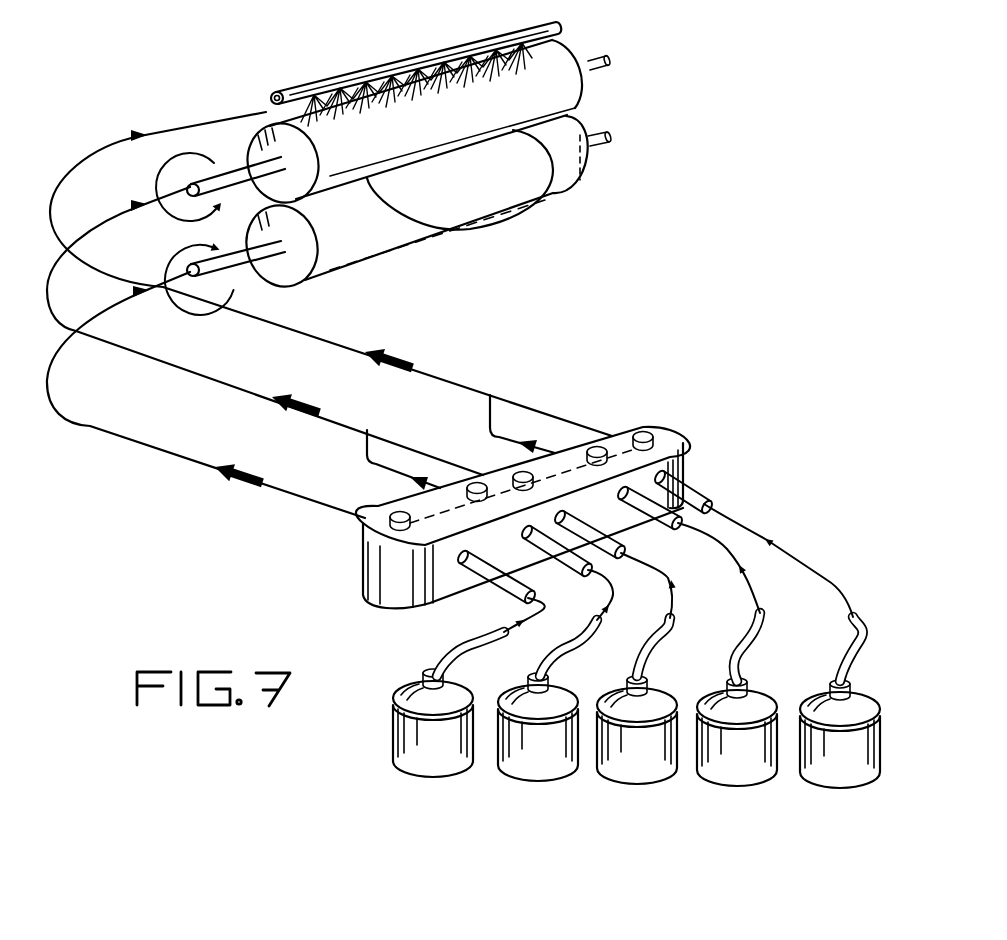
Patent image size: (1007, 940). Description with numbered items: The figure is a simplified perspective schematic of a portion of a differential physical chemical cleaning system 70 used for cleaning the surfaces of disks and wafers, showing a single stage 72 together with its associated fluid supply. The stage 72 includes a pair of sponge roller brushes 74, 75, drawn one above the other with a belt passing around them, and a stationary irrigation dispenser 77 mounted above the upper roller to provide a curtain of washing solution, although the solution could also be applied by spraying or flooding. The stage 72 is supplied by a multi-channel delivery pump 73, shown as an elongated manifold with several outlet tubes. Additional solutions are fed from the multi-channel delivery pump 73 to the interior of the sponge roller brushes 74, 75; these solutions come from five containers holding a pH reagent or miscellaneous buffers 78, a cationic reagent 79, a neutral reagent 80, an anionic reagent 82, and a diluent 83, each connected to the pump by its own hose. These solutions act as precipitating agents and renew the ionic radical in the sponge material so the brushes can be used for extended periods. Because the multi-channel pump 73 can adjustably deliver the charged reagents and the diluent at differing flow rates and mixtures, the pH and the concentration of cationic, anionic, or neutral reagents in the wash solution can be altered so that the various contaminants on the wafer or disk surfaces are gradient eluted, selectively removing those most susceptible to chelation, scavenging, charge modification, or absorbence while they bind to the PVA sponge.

The differential physical chemical cleaning system 70 is at (214, 551).
The stage 72 is at (636, 100).
The multi-channel delivery pump 73 is at (357, 583).
The sponge roller brush 74 is at (262, 124).
The sponge roller brush 75 is at (303, 266).
The stationary irrigation dispenser 77 is at (317, 82).
The pH reagent or miscellaneous buffers 78 is at (397, 728).
The cationic reagent 79 is at (513, 760).
The neutral reagent 80 is at (627, 762).
The anionic reagent 82 is at (727, 772).
The diluent 83 is at (825, 772).